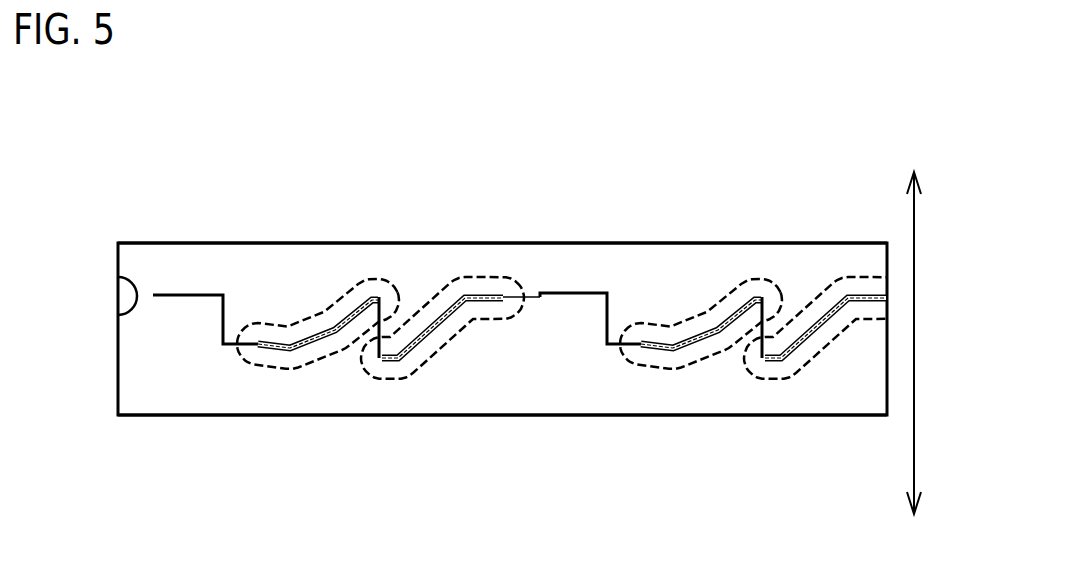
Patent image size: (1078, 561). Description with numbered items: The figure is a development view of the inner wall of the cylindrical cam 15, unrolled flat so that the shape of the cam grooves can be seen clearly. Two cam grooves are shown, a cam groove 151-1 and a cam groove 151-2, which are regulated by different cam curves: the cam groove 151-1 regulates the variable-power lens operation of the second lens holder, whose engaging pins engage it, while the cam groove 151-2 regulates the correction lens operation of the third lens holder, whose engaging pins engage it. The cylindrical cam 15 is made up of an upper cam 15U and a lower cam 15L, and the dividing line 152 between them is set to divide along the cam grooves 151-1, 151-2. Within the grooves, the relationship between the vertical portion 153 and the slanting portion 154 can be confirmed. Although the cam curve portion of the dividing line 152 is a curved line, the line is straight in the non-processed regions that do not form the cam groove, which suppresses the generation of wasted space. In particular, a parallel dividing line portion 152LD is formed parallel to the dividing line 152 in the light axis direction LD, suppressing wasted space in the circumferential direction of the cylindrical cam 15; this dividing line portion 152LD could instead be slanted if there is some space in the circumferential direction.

The cylindrical cam 15 is at (700, 228).
The upper cam 15U is at (163, 253).
The lower cam 15L is at (177, 385).
The cam groove 151-1 is at (118, 297).
The cam groove 151-2 is at (267, 362).
The dividing line 152 is at (593, 294).
The parallel dividing line portion 152LD is at (240, 305).
The vertical portion 153 is at (452, 320).
The slanting portion 154 is at (458, 287).
The light axis direction LD is at (913, 213).